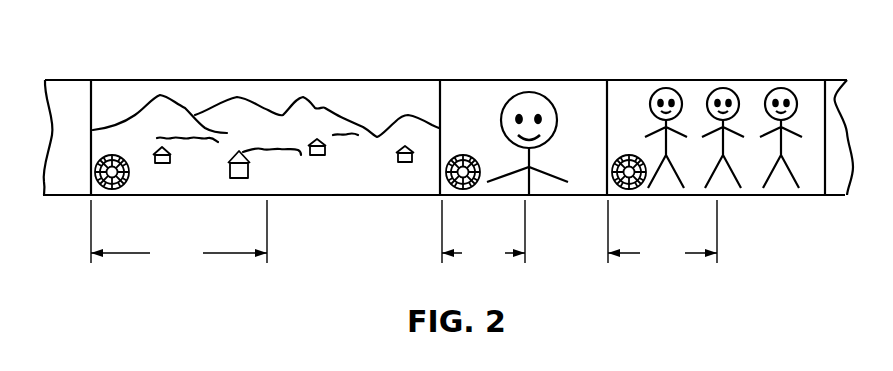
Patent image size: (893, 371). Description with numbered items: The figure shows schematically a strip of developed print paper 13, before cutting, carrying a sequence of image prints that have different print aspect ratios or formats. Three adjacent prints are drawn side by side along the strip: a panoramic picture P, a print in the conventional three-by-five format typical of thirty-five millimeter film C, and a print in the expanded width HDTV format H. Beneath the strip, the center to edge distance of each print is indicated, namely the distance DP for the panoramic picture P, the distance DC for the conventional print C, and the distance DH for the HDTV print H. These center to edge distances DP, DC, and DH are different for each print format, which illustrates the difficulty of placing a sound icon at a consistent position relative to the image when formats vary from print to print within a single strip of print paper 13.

The strip of print paper 13 is at (448, 98).
The panoramic picture P is at (257, 68).
The conventional 3×5 format print C is at (526, 68).
The expanded width HDTV format print H is at (713, 68).
The center to edge distance of panoramic print DP is at (179, 242).
The center to edge distance of conventional print DC is at (483, 242).
The center to edge distance of HDTV print DH is at (662, 242).